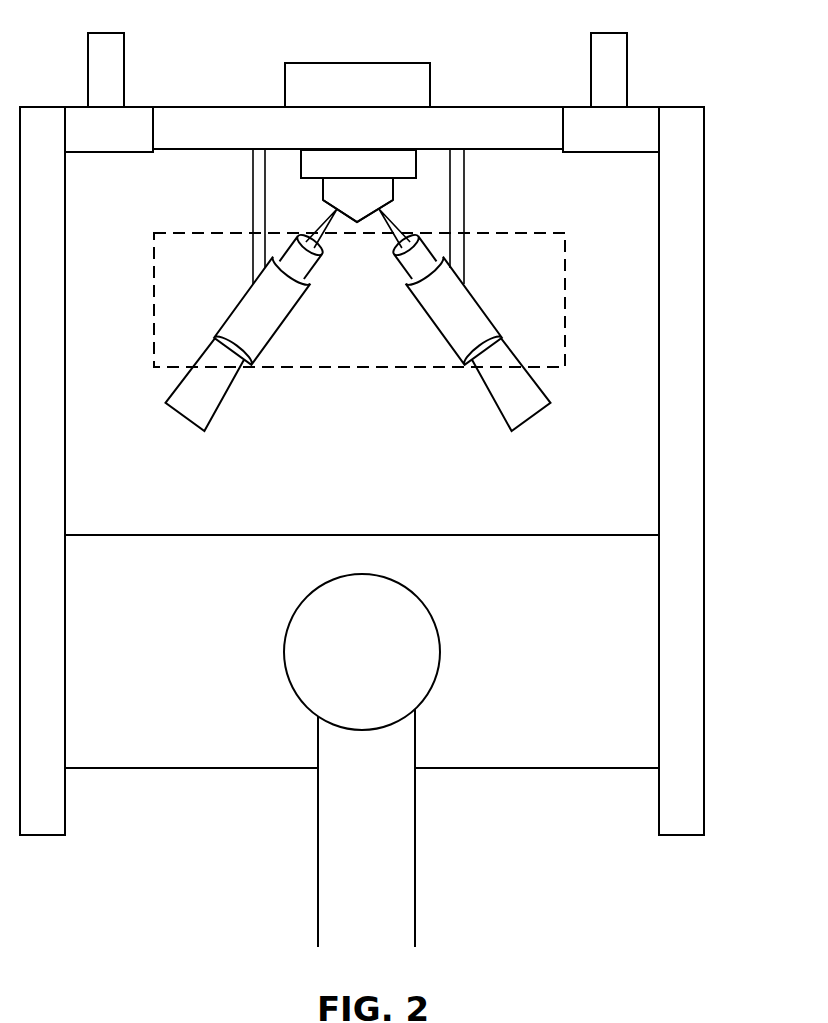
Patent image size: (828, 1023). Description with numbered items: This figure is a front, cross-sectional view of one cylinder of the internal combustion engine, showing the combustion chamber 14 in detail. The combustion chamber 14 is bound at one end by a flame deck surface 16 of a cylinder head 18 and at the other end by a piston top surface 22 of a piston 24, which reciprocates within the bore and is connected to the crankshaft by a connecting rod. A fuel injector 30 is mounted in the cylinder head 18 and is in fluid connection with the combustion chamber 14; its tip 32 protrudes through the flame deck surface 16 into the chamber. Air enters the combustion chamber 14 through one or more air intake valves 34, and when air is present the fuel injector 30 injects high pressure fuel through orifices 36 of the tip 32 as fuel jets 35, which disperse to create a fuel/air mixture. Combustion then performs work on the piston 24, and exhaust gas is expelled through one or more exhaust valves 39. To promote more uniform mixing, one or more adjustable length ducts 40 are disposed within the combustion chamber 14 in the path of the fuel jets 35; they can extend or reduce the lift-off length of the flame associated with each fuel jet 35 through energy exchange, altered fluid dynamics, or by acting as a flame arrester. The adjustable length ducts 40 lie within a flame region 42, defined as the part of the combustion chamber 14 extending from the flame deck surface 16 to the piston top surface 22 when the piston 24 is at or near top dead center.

The combustion chamber 14 is at (593, 473).
The flame deck surface 16 is at (505, 152).
The cylinder head 18 is at (475, 128).
The piston top surface 22 is at (407, 535).
The piston 24 is at (585, 685).
The fuel injector 30 is at (430, 78).
The tip 32 is at (343, 195).
The air intake valve 34 is at (108, 107).
The fuel jet 35 is at (316, 238).
The orifice 36 is at (338, 210).
The exhaust valve 39 is at (613, 107).
The adjustable length duct 40 is at (152, 283).
The flame region 42 is at (608, 307).